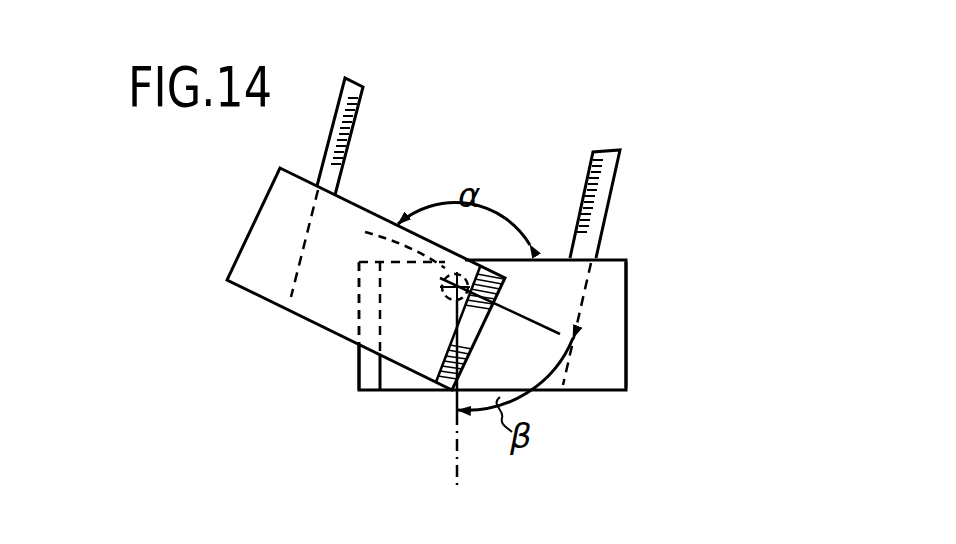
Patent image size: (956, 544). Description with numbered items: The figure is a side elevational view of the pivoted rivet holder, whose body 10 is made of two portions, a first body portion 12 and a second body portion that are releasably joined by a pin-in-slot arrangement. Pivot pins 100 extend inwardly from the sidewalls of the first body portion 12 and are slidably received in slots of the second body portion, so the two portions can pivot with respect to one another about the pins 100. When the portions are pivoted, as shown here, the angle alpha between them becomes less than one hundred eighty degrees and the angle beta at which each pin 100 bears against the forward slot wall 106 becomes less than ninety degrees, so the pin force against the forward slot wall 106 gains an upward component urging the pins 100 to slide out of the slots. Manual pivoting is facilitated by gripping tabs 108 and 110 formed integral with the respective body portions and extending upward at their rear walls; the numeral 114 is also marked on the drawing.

The body 10 is at (655, 268).
The first body portion 12 is at (232, 263).
The pivot pins 100 is at (442, 286).
The forward slot wall 106 is at (395, 258).
The gripping tab 108 is at (364, 92).
The gripping tab 110 is at (612, 180).
The side wall 114 is at (629, 297).